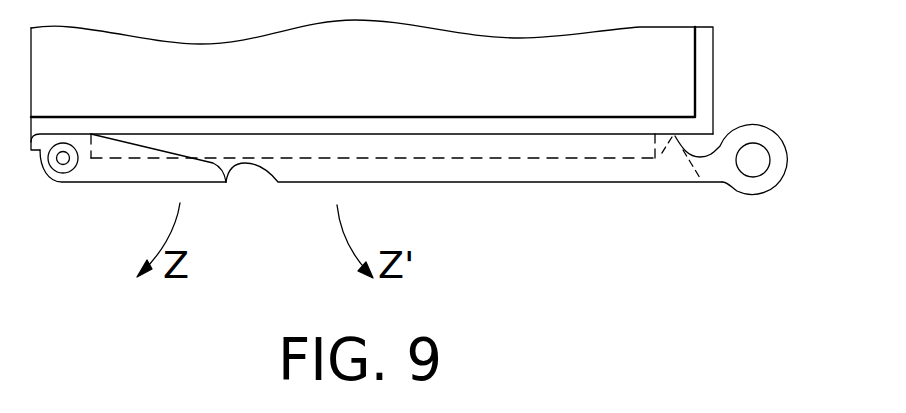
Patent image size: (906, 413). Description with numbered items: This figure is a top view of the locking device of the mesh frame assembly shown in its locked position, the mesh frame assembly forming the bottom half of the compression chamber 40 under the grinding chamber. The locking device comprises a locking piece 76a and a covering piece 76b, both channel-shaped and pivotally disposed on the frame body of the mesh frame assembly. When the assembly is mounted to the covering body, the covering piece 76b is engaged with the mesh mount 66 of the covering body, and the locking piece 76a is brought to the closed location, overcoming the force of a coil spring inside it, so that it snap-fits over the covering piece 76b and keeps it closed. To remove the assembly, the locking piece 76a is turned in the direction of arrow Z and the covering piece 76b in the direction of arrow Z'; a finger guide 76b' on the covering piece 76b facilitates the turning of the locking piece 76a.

The compression chamber 40 is at (678, 76).
The locking piece 76a is at (97, 168).
The finger guide 76b' is at (474, 201).
The mesh mount 66 is at (497, 152).
The covering piece 76b is at (717, 186).